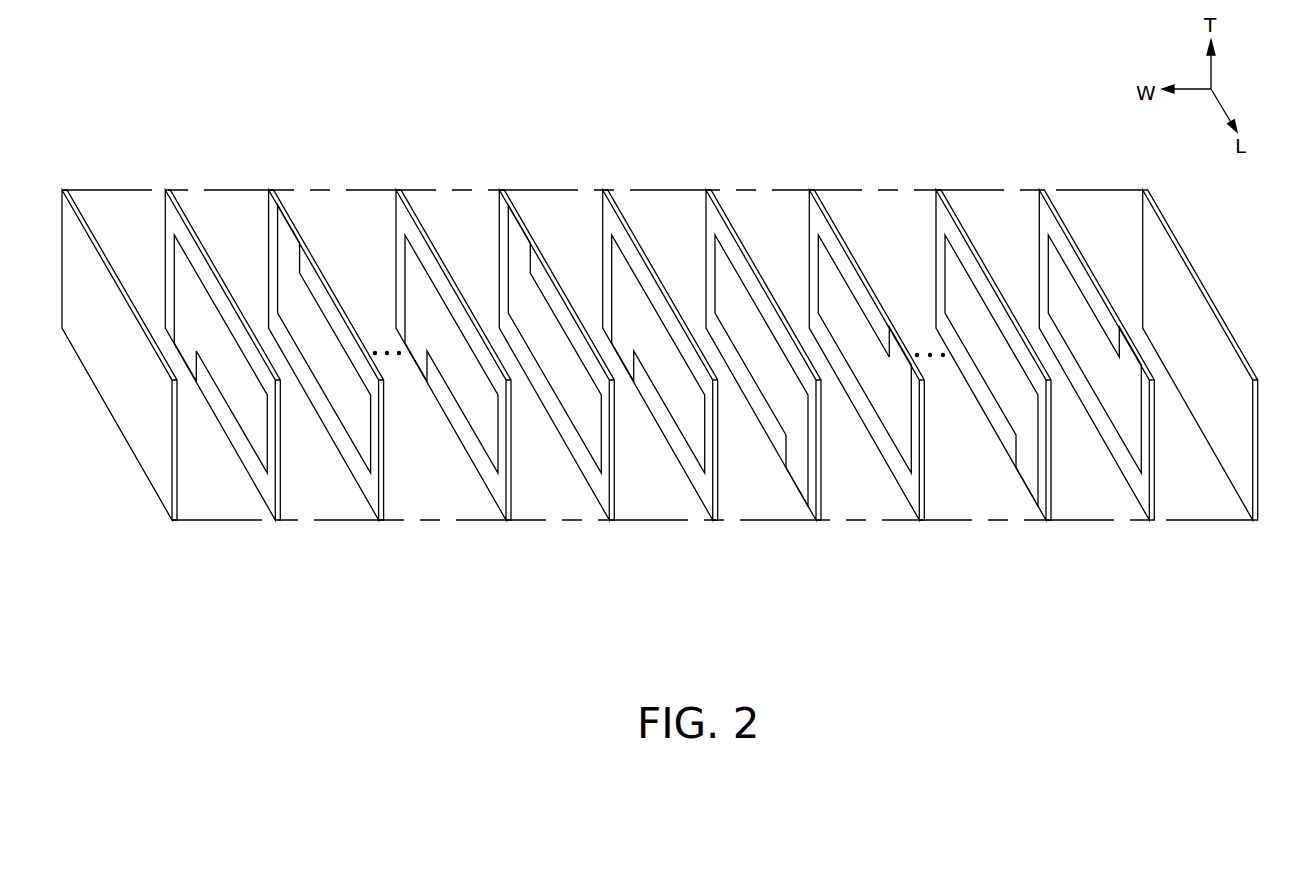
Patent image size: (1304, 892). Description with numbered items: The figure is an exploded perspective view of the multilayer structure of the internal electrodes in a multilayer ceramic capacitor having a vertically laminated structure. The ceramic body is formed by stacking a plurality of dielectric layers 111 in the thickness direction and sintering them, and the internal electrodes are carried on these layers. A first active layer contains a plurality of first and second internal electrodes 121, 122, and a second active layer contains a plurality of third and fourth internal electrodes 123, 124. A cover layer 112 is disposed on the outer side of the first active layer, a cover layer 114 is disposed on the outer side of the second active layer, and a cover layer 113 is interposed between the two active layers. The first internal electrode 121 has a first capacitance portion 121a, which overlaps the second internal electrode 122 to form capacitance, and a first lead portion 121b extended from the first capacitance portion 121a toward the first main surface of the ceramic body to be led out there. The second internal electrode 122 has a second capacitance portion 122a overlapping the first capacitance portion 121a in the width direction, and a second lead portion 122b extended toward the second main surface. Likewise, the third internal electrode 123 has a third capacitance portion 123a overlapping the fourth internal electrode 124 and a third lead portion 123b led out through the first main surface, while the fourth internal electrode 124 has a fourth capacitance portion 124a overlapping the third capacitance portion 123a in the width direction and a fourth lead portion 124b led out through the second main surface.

The dielectric layer 111 is at (307, 282).
The cover layer 112 is at (157, 465).
The cover layer 113 is at (1157, 257).
The cover layer 114 is at (697, 480).
The first internal electrode 121 is at (208, 442).
The first capacitance portion 121a is at (240, 403).
The first lead portion 121b is at (188, 353).
The second internal electrode 122 is at (286, 267).
The second capacitance portion 122a is at (288, 242).
The second lead portion 122b is at (307, 315).
The third internal electrode 123 is at (748, 442).
The third capacitance portion 123a is at (777, 380).
The third lead portion 123b is at (797, 470).
The fourth internal electrode 124 is at (849, 267).
The fourth capacitance portion 124a is at (830, 288).
The fourth lead portion 124b is at (897, 360).